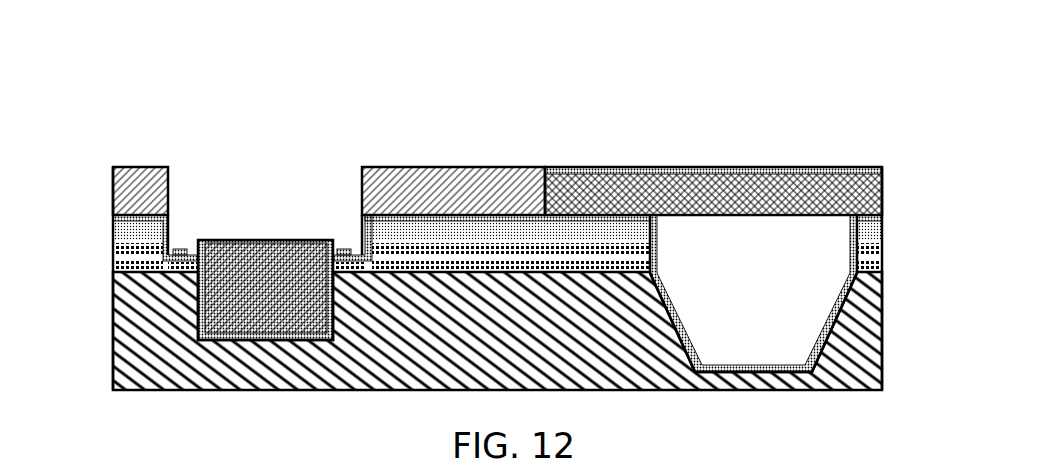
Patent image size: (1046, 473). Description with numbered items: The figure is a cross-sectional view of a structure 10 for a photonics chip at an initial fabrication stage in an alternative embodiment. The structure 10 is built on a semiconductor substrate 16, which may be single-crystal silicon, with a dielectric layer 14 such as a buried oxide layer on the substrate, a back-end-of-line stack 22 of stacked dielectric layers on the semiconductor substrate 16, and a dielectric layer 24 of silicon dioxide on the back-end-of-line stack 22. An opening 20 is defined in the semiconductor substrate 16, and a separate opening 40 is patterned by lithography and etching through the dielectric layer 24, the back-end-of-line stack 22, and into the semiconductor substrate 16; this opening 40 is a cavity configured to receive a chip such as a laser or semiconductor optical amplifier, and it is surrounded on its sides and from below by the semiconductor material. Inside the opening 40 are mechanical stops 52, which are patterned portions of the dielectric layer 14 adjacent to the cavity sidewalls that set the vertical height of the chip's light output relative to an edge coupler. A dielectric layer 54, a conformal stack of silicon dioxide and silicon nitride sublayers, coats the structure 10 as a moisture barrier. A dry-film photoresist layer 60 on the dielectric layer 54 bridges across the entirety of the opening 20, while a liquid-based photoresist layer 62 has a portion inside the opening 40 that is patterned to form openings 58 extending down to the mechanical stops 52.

The structure 10 is at (130, 42).
The dielectric layer 14 is at (863, 267).
The semiconductor substrate 16 is at (862, 340).
The opening 20 is at (764, 315).
The back-end-of-line stack 22 is at (145, 252).
The dielectric layer 24 is at (480, 233).
The opening 40 is at (273, 193).
The mechanical stops 52 is at (173, 255).
The dielectric layer 54 is at (422, 218).
The openings 58 is at (187, 232).
The photoresist layer 60 is at (693, 200).
The photoresist layer 62 is at (275, 282).